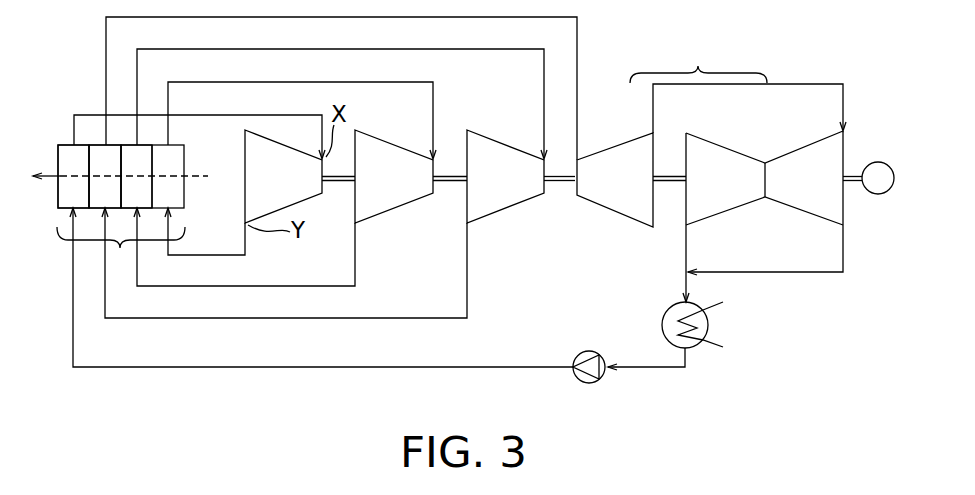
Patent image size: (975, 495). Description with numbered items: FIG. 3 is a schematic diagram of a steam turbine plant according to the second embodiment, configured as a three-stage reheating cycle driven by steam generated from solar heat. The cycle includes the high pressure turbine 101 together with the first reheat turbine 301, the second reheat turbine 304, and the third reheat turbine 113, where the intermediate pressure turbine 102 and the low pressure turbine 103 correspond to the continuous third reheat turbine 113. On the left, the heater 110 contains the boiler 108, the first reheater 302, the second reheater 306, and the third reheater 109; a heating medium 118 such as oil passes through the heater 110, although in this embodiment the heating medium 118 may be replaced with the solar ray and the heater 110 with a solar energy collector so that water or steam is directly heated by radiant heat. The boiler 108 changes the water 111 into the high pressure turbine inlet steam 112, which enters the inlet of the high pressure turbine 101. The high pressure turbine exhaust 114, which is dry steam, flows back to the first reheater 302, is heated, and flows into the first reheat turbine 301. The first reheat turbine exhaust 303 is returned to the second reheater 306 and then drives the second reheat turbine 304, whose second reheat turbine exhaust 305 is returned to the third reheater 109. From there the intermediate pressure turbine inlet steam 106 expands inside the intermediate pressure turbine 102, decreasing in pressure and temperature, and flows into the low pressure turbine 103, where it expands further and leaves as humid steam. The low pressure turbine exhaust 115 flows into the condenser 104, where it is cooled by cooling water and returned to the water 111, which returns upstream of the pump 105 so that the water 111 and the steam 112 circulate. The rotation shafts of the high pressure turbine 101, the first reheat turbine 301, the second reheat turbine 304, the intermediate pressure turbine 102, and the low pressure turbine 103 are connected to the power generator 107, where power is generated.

The high pressure turbine 101 is at (310, 148).
The intermediate pressure turbine 102 is at (625, 144).
The low pressure turbine 103 is at (728, 148).
The condenser 104 is at (669, 310).
The pump 105 is at (591, 351).
The intermediate pressure turbine inlet steam 106 is at (578, 70).
The power generator 107 is at (878, 162).
The boiler 108 is at (57, 160).
The third reheater 109 is at (95, 157).
The heater 110 is at (121, 242).
The water 111 is at (512, 365).
The high pressure turbine inlet steam 112 is at (210, 115).
The third reheat turbine 113 is at (738, 88).
The high pressure turbine exhaust 114 is at (213, 256).
The low pressure turbine exhaust 115 is at (688, 243).
The heating medium 118 is at (200, 178).
The first reheat turbine 301 is at (398, 146).
The first reheater 302 is at (172, 163).
The first reheat turbine exhaust 303 is at (356, 249).
The second reheat turbine 304 is at (505, 146).
The second reheat turbine exhaust 305 is at (468, 257).
The second reheater 306 is at (138, 157).